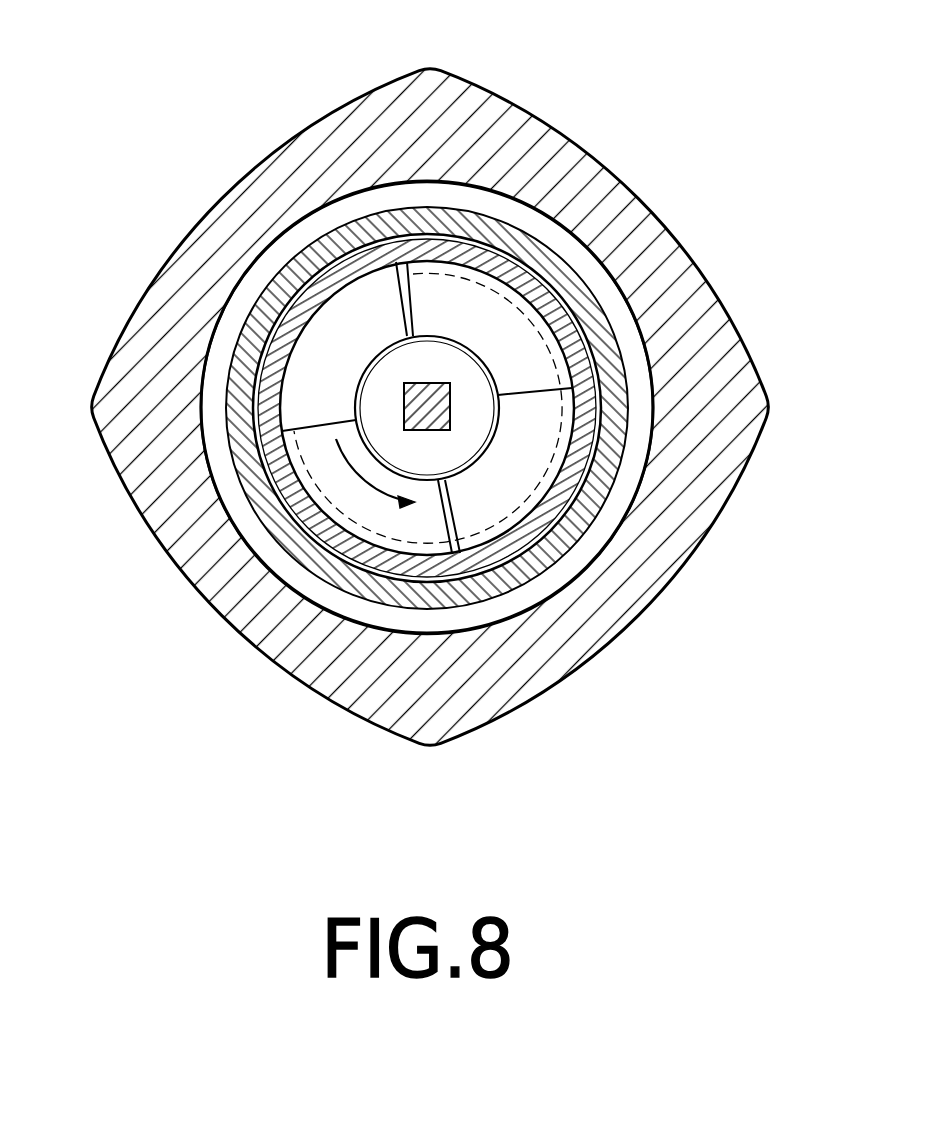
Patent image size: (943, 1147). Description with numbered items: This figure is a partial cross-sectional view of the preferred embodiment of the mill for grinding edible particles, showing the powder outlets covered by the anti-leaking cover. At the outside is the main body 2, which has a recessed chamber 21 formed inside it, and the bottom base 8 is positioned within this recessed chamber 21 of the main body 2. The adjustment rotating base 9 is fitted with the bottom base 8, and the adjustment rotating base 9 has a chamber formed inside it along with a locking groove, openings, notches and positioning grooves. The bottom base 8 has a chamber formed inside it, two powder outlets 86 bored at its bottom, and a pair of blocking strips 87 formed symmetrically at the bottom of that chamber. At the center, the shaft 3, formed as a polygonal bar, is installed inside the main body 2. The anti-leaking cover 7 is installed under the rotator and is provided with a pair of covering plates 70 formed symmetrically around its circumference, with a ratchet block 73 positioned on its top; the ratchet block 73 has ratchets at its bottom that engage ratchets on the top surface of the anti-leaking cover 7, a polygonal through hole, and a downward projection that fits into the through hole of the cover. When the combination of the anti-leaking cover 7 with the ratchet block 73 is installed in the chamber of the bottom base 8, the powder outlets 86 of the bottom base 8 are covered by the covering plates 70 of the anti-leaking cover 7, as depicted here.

The main body 2 is at (728, 385).
The recessed chamber 21 is at (213, 330).
The adjustment rotating base 9 is at (587, 308).
The bottom base 8 is at (548, 302).
The powder outlets 86 is at (480, 313).
The anti-leaking cover 7 is at (522, 375).
The ratchet block 73 is at (450, 457).
The shaft 3 is at (428, 400).
The covering plates 70 is at (498, 430).
The blocking strips 87 is at (410, 330).